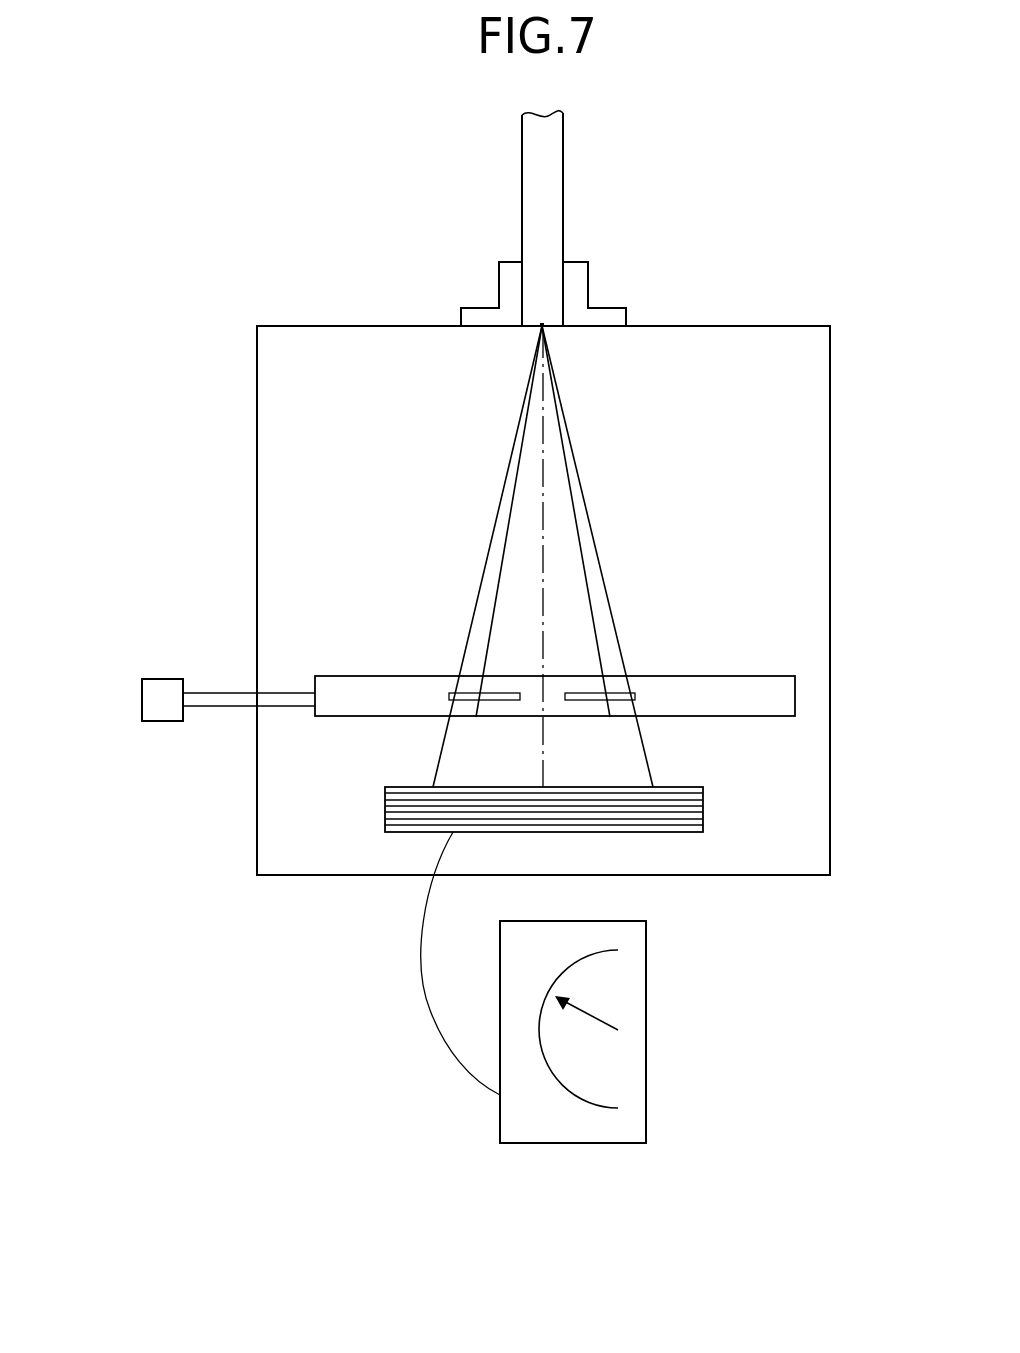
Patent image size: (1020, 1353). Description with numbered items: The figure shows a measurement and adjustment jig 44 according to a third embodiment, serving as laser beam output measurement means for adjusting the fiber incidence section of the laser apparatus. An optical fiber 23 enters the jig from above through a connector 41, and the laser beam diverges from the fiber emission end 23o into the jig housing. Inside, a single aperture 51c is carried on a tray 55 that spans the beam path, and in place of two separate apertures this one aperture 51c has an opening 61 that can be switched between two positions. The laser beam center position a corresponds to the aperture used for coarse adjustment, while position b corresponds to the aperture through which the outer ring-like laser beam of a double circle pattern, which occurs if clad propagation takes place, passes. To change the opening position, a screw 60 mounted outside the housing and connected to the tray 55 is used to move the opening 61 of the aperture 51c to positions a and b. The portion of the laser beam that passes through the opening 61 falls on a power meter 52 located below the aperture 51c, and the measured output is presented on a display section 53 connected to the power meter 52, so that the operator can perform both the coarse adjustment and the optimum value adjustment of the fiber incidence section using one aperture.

The optical fiber 23 is at (560, 188).
The fiber emission end 23o is at (542, 326).
The connector 41 is at (582, 280).
The measurement and adjustment jig 44 is at (822, 485).
The aperture 51c is at (635, 695).
The power meter 52 is at (703, 810).
The display section 53 is at (648, 1037).
The tray 55 is at (340, 717).
The screw 60 is at (142, 700).
The opening 61 is at (540, 690).
The laser beam center position a is at (555, 702).
The outer ring position b is at (767, 682).